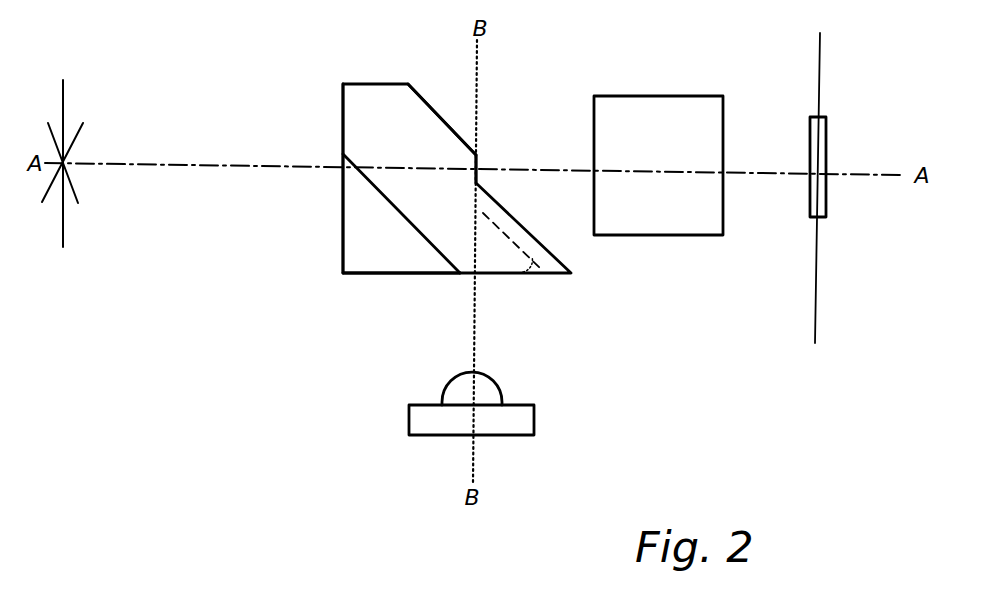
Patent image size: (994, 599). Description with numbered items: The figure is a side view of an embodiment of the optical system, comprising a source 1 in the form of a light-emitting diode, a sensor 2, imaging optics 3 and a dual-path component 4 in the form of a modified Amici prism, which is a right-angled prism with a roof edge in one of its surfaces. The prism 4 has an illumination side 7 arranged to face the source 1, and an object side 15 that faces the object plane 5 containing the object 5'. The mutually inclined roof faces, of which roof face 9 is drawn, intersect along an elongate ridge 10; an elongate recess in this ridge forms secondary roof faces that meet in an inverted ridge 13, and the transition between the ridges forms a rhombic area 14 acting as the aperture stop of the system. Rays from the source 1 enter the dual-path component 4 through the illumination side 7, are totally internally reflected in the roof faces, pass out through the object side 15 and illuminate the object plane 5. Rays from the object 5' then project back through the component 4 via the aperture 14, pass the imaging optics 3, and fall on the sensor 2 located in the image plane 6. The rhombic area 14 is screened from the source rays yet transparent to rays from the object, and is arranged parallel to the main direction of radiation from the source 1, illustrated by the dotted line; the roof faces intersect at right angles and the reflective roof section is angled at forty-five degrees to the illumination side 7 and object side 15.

The source 1 is at (515, 428).
The sensor 2 is at (827, 137).
The imaging optics 3 is at (687, 96).
The dual-path component 4 is at (436, 91).
The object plane 5 is at (60, 178).
The object 5' is at (76, 124).
The image plane 6 is at (817, 203).
The illumination side 7 is at (380, 274).
The roof face 9 is at (460, 210).
The ridge 10 is at (451, 124).
The inverted ridge 13 is at (523, 274).
The rhombic area 14 is at (479, 168).
The object side 15 is at (343, 128).